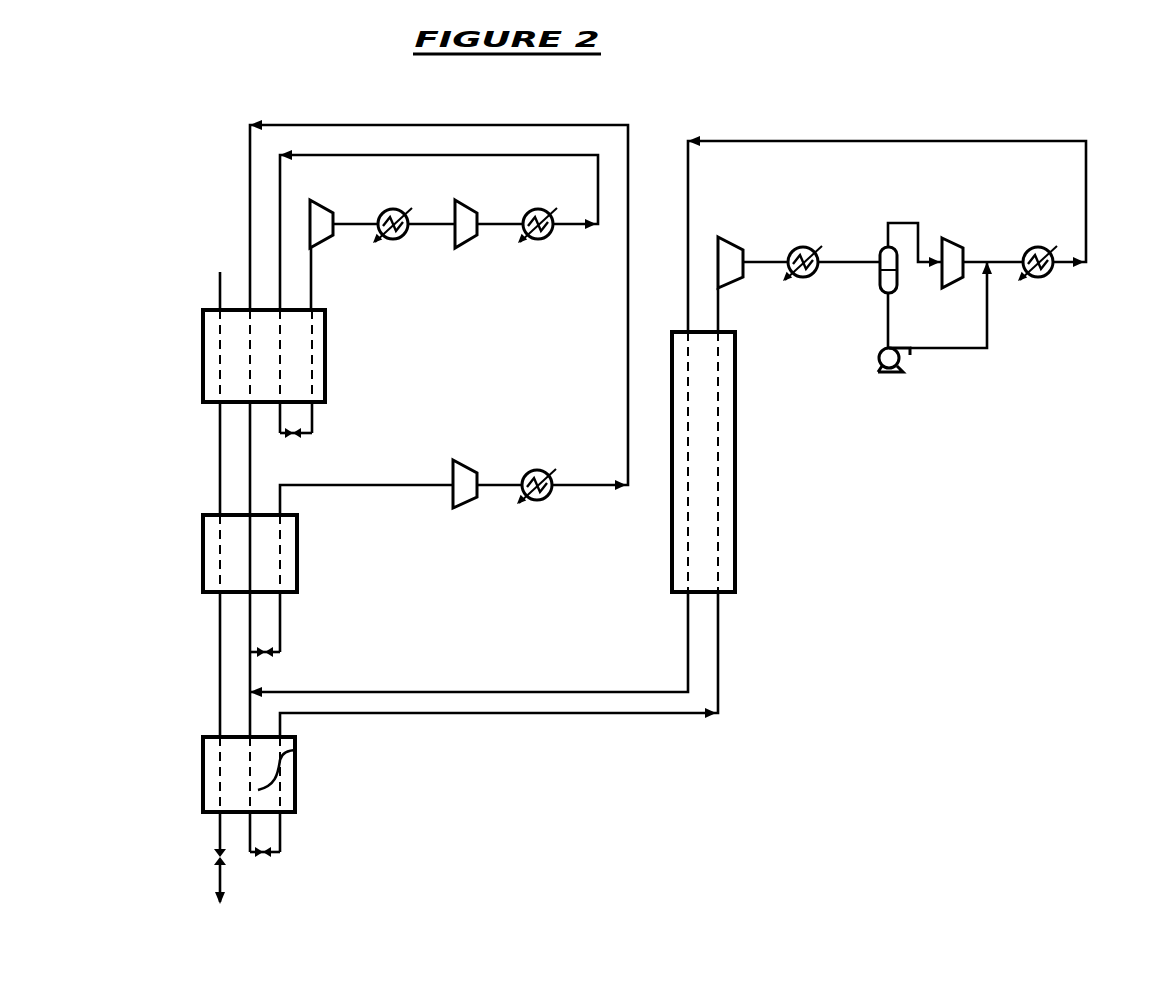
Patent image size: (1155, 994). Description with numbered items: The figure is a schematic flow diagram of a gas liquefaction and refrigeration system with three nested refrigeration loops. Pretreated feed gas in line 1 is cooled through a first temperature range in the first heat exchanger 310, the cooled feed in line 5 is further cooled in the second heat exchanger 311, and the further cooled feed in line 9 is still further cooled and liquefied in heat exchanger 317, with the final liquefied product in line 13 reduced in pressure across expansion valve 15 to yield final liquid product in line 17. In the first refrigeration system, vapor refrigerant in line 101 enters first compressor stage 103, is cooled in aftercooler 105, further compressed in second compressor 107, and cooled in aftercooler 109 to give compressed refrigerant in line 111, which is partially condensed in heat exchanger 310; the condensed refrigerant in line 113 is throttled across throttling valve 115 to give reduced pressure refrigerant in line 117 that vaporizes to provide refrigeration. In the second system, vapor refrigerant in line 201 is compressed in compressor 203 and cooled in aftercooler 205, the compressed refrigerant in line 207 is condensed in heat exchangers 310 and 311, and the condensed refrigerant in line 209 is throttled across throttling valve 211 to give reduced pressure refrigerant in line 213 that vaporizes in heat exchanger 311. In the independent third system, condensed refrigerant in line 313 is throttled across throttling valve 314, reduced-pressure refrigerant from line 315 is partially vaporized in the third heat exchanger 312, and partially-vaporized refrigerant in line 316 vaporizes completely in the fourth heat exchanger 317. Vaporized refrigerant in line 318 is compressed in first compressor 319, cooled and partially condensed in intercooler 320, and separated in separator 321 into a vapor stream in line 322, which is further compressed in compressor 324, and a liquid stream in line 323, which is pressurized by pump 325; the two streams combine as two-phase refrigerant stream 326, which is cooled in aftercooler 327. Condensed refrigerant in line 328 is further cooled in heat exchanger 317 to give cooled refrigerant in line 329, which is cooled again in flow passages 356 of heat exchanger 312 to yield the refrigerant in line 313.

The feed gas line 1 is at (219, 280).
The cooled feed line 5 is at (219, 430).
The further cooled feed line 9 is at (219, 696).
The final liquefied product line 13 is at (219, 825).
The expansion valve 15 is at (212, 860).
The final liquid product line 17 is at (215, 886).
The vapor refrigerant line 101 is at (335, 258).
The first compressor stage 103 is at (312, 200).
The aftercooler 105 is at (395, 240).
The second compressor 107 is at (456, 248).
The aftercooler 109 is at (538, 240).
The compressed refrigerant line 111 is at (512, 156).
The condensed refrigerant line 113 is at (282, 436).
The throttling valve 115 is at (310, 437).
The reduced pressure refrigerant line 117 is at (313, 405).
The vapor refrigerant line 201 is at (355, 485).
The compressor 203 is at (454, 462).
The aftercooler 205 is at (538, 501).
The compressed refrigerant line 207 is at (627, 290).
The condensed refrigerant line 209 is at (249, 605).
The throttling valve 211 is at (263, 658).
The reduced pressure refrigerant line 213 is at (305, 637).
The first heat exchange zone or heat exchanger 310 is at (203, 340).
The second heat exchange zone or heat exchanger 311 is at (203, 550).
The third heat exchange zone or heat exchanger 312 is at (203, 767).
The condensed refrigerant line 313 is at (251, 858).
The throttling valve 314 is at (275, 855).
The reduced-pressure condensed refrigerant line 315 is at (281, 825).
The partially-vaporized refrigerant line 316 is at (556, 714).
The fourth heat exchange zone or heat exchanger 317 is at (760, 498).
The vaporized refrigerant line 318 is at (720, 302).
The first compressor 319 is at (720, 238).
The intercooler 320 is at (800, 247).
The separator 321 is at (878, 290).
The vapor stream line 322 is at (916, 224).
The liquid stream line 323 is at (885, 316).
The compressor 324 is at (944, 238).
The pump 325 is at (878, 372).
The two-phase refrigerant stream 326 is at (1012, 258).
The aftercooler 327 is at (1038, 278).
The condensed refrigerant line 328 is at (876, 123).
The cooled refrigerant line 329 is at (440, 692).
The flow passages 356 is at (306, 765).